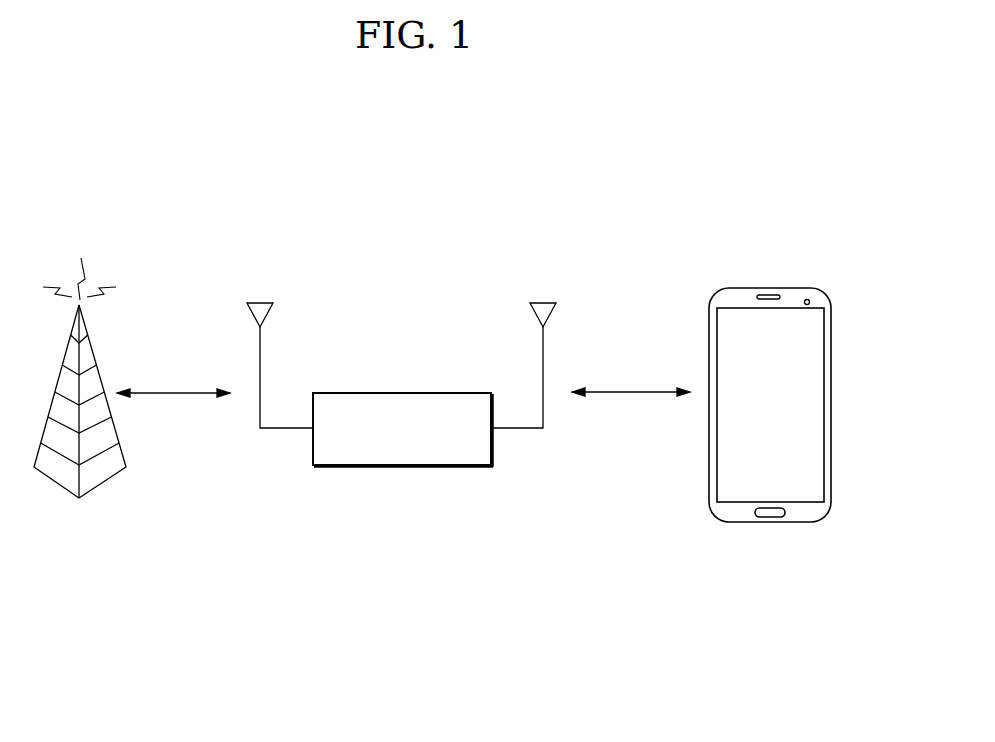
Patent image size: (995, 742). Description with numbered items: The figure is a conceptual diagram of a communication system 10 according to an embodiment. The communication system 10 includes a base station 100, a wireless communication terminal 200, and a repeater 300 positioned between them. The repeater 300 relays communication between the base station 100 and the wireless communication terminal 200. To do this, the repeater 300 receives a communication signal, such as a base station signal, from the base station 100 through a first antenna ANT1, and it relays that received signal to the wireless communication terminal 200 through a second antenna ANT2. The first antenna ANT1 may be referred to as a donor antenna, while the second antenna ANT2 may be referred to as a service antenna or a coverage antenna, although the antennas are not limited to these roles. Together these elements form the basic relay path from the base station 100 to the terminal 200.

The communication system 10 is at (705, 209).
The base station 100 is at (97, 352).
The wireless communication terminal 200 is at (788, 288).
The repeater 300 is at (418, 393).
The first antenna ANT1 is at (271, 348).
The second antenna ANT2 is at (533, 348).